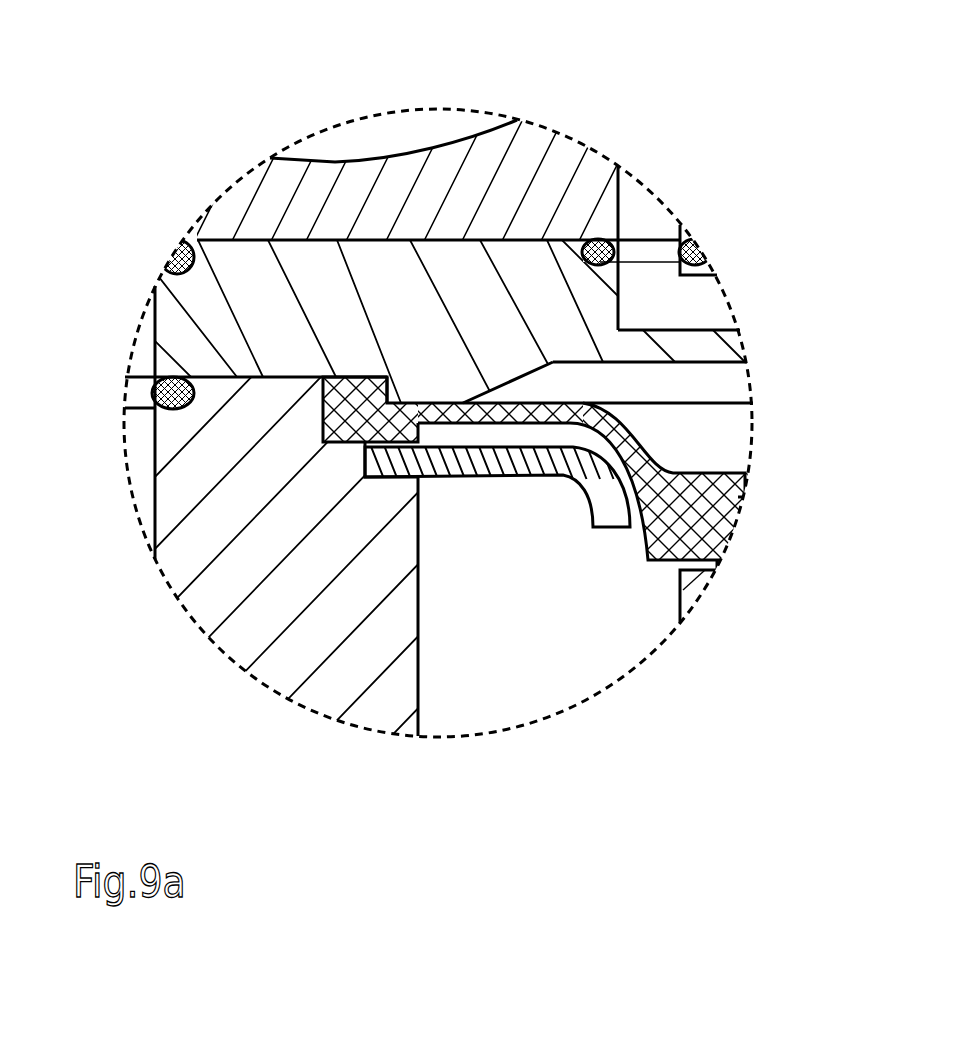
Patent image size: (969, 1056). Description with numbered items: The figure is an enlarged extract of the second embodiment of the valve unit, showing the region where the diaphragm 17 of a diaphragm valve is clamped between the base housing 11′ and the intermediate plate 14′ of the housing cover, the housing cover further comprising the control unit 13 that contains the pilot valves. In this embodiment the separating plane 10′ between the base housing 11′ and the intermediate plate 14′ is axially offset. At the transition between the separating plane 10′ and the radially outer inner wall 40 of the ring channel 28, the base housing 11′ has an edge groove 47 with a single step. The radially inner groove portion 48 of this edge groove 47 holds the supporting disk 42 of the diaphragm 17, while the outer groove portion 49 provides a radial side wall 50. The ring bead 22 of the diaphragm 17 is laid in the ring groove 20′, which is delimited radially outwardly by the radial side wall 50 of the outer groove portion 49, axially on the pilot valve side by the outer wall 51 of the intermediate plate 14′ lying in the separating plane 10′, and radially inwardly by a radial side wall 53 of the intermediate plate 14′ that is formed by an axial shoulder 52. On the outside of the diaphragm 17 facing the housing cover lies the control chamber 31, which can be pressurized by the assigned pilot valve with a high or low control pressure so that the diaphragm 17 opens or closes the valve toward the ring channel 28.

The control unit 13 is at (545, 192).
The intermediate plate 14′ is at (289, 307).
The ring groove 20′ is at (348, 339).
The axial shoulder 52 is at (391, 337).
The radial side wall 53 is at (387, 376).
The radial side wall 50 is at (320, 405).
The separating plane 10′ is at (100, 376).
The outer wall 51 is at (237, 380).
The outer groove portion 49 is at (273, 432).
The ring bead 22 is at (155, 547).
The edge groove 47 is at (320, 490).
The base housing 11′ is at (268, 607).
The radially inner groove portion 48 is at (371, 512).
The radially outer inner wall 40 is at (452, 605).
The ring channel 28 is at (503, 614).
The supporting disk 42 is at (518, 462).
The diaphragm 17 is at (687, 520).
The control chamber 31 is at (702, 423).